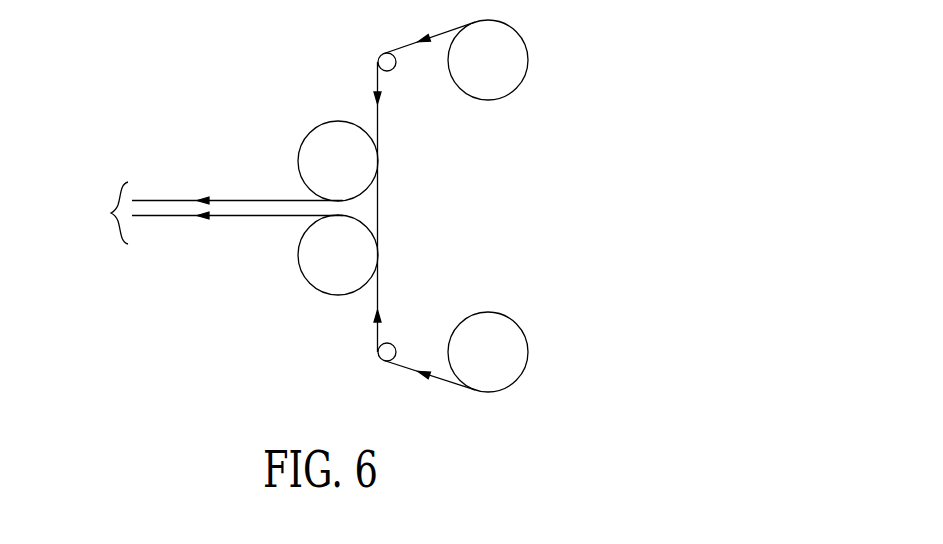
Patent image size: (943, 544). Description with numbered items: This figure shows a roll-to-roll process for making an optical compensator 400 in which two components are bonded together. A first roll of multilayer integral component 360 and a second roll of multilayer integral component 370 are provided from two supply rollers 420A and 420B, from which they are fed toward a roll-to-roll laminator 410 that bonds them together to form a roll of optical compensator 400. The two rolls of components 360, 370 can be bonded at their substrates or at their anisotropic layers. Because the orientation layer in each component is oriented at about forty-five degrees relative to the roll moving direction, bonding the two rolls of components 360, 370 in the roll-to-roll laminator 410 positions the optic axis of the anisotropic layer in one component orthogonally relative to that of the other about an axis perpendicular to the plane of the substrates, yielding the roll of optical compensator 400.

The first roll of multilayer integral component 360 is at (178, 199).
The second roll of multilayer integral component 370 is at (183, 218).
The optical compensator 400 is at (91, 213).
The roll-to-roll laminator 410 is at (357, 252).
The supply roller 420A is at (525, 64).
The supply roller 420B is at (513, 374).